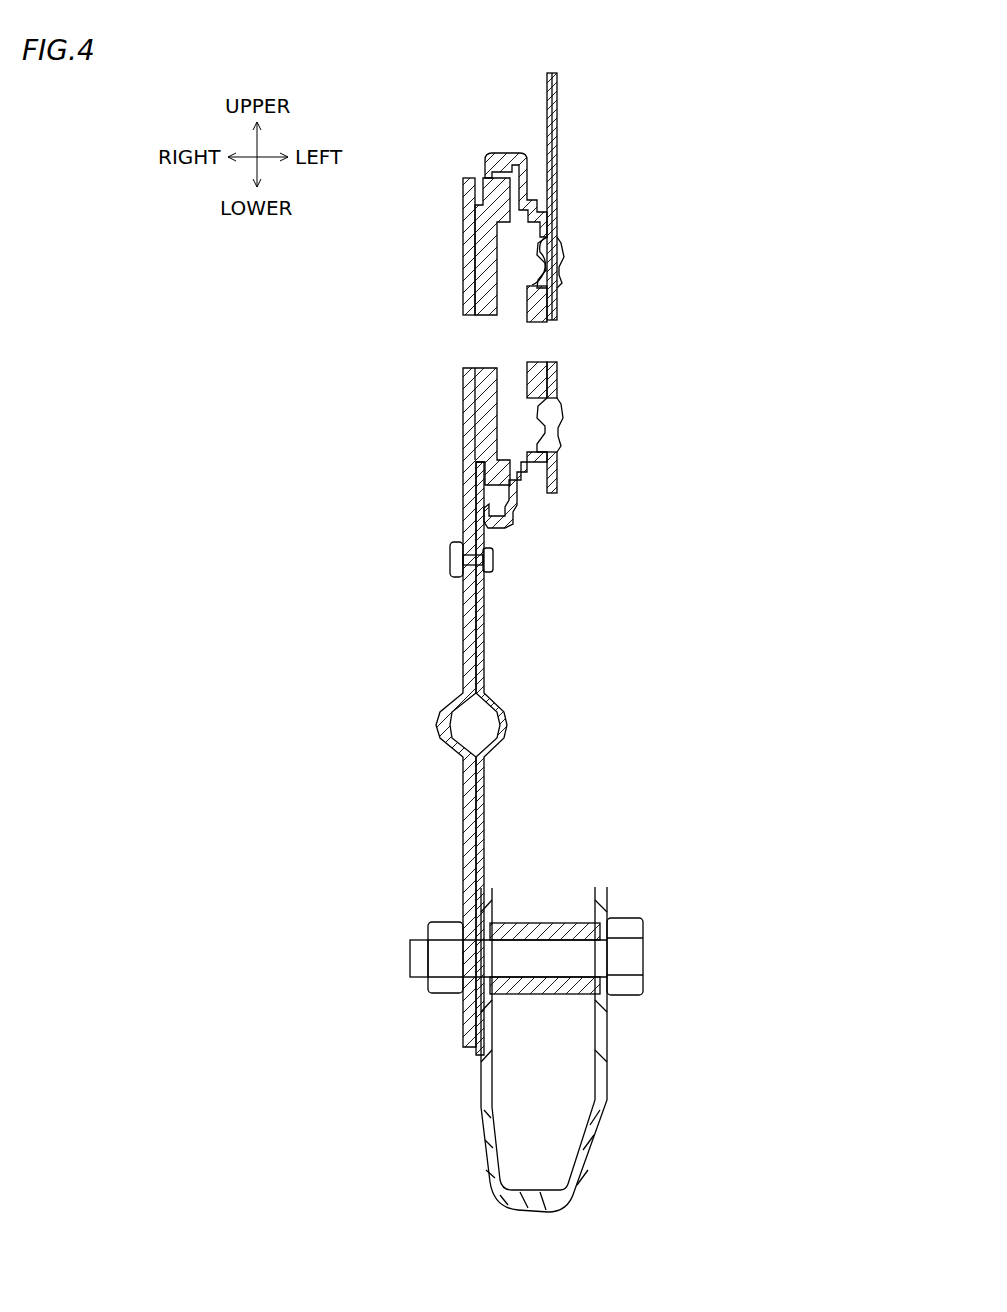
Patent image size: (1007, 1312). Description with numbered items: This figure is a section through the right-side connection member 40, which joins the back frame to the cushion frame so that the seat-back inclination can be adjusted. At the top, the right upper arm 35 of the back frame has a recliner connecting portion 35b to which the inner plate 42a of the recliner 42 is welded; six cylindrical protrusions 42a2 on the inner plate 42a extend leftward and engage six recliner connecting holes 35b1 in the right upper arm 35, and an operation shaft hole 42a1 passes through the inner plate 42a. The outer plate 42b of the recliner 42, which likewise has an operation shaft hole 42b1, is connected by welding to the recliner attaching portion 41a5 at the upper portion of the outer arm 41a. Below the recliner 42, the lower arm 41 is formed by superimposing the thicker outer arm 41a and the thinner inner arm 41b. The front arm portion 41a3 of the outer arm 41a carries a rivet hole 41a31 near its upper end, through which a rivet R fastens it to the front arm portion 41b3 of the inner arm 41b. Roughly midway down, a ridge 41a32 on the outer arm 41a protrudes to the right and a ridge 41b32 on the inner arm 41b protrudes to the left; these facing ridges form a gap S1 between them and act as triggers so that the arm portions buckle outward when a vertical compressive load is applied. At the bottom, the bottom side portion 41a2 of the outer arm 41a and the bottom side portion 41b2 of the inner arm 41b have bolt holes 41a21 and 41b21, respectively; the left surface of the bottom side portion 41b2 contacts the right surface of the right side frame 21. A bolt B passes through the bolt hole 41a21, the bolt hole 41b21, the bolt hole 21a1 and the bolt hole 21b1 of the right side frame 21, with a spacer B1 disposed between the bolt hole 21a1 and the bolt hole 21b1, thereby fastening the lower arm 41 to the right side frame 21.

The right upper arm 35 is at (613, 196).
The recliner connecting portion 35b is at (558, 155).
The recliner connecting hole 35b1 is at (560, 243).
The inner plate 42a is at (528, 175).
The operation shaft hole 42a1 is at (540, 320).
The cylindrical protrusion 42a2 is at (565, 262).
The outer plate 42b is at (483, 176).
The operation shaft hole 42b1 is at (475, 318).
The connection member 40 is at (513, 715).
The lower arm 41 is at (513, 718).
The outer arm 41a is at (473, 707).
The recliner attaching portion 41a5 is at (463, 423).
The front arm portion 41a3 is at (463, 647).
The rivet hole 41a31 is at (458, 572).
The ridge 41a32 is at (438, 725).
The bolt hole 41a21 is at (455, 958).
The bottom side portion 41a2 is at (465, 1030).
The inner arm 41b is at (491, 758).
The front arm portion 41b3 is at (485, 633).
The ridge 41b32 is at (506, 728).
The bottom side portion 41b2 is at (505, 1012).
The bolt hole 41b21 is at (510, 990).
The gap S1 is at (452, 748).
The recliner 42 is at (500, 530).
The rivet R is at (450, 562).
The bolt B is at (645, 968).
The spacer B1 is at (553, 925).
The bolt hole 21a1 is at (510, 937).
The right side frame 21 is at (578, 1044).
The bolt hole 21b1 is at (612, 940).